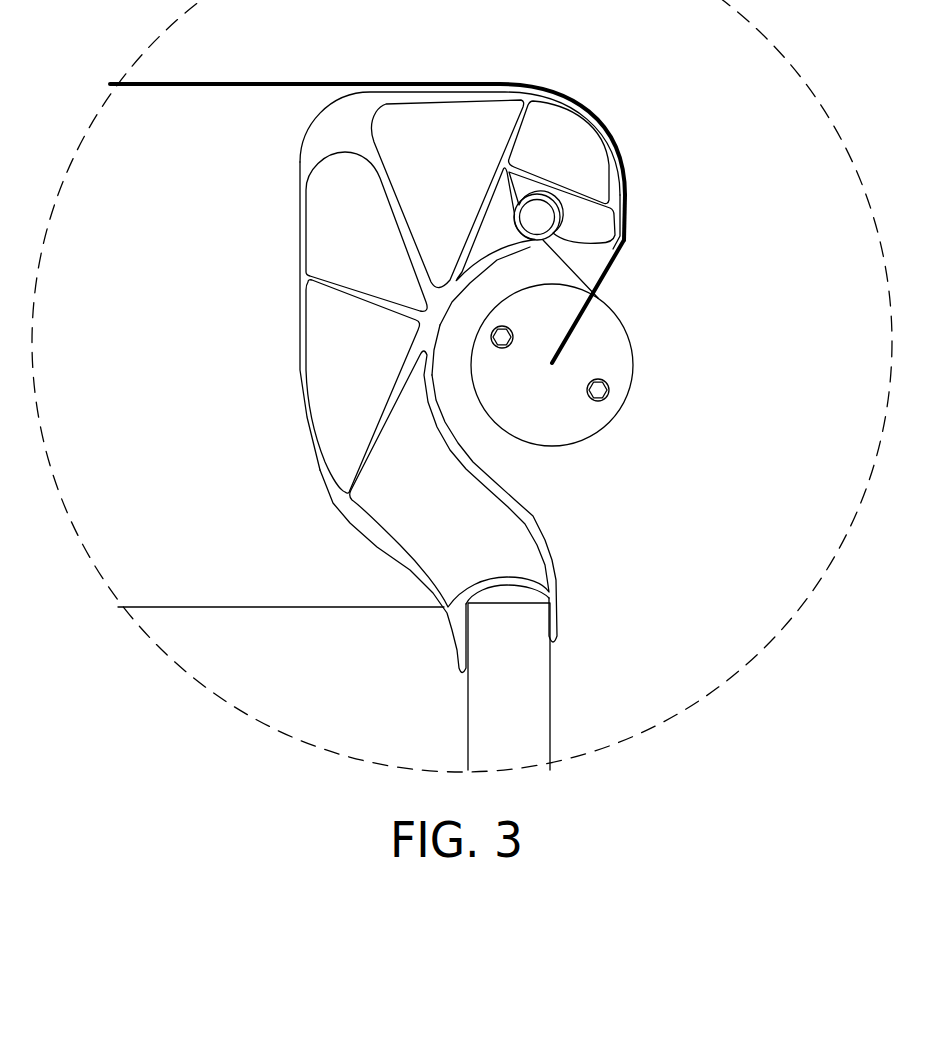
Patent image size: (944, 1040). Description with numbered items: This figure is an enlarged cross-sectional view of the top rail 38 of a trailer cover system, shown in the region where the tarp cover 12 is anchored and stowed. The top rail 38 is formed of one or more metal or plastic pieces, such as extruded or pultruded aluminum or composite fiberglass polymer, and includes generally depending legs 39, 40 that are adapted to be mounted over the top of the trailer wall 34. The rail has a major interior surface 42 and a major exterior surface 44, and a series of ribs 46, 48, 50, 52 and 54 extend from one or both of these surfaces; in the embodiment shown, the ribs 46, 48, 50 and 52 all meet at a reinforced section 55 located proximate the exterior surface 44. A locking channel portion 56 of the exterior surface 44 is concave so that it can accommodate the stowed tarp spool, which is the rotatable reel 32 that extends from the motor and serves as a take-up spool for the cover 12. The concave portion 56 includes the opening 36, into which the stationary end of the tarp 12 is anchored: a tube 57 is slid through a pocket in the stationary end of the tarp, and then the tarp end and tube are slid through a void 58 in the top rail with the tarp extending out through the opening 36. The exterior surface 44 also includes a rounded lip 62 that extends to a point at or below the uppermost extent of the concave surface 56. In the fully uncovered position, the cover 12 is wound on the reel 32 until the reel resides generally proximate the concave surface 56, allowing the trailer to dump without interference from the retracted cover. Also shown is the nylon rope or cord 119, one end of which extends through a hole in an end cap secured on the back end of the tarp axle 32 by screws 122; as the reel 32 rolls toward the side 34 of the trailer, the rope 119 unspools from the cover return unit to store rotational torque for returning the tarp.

The cover 12 is at (600, 298).
The rotatable reel 32 is at (540, 412).
The trailer side 34 is at (551, 700).
The opening 36 is at (543, 244).
The top rail 38 is at (626, 87).
The depending leg 39 is at (557, 623).
The depending leg 40 is at (453, 652).
The major interior surface 42 is at (300, 253).
The major exterior surface 44 is at (626, 190).
The rib 46 is at (383, 427).
The rib 48 is at (369, 308).
The rib 50 is at (400, 203).
The rib 52 is at (483, 187).
The rib 54 is at (572, 172).
The reinforced section 55 is at (432, 322).
The locking channel portion 56 is at (460, 293).
The tube 57 is at (525, 209).
The void 58 is at (597, 220).
The rounded lip 62 is at (623, 248).
The rope 119 is at (333, 82).
The screws 122 is at (608, 385).